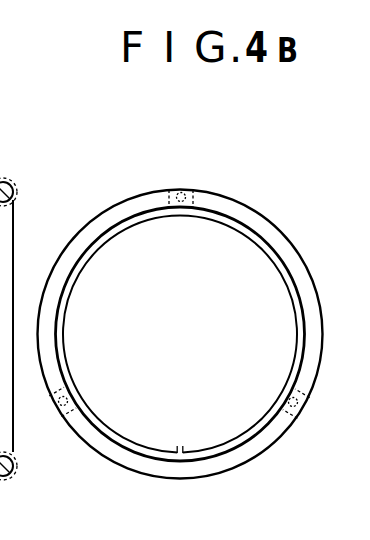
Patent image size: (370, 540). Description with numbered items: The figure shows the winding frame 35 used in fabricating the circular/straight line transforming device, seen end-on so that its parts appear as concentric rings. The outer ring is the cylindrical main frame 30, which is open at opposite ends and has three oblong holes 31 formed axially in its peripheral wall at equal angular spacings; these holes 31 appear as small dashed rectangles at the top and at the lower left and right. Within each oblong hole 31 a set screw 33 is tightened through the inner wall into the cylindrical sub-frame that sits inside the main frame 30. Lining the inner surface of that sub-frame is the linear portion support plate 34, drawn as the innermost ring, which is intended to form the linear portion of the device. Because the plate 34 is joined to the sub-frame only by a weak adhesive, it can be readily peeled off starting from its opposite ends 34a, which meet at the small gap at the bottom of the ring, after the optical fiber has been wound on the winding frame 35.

The cylindrical main frame 30 is at (229, 462).
The oblong holes 31 is at (190, 189).
The set screws 33 is at (177, 189).
The linear portion support plate 34 is at (248, 439).
The opposite ends of the linear portion support plate 34a is at (180, 450).
The winding frame 35 is at (186, 317).